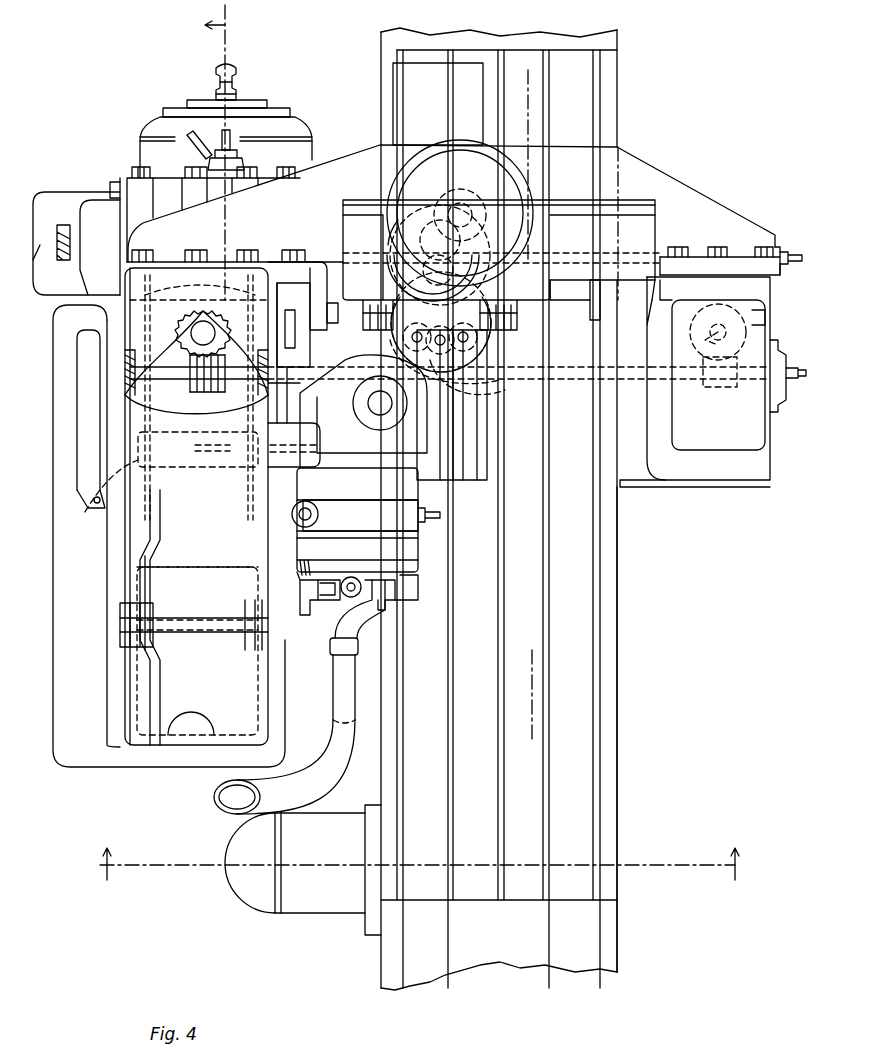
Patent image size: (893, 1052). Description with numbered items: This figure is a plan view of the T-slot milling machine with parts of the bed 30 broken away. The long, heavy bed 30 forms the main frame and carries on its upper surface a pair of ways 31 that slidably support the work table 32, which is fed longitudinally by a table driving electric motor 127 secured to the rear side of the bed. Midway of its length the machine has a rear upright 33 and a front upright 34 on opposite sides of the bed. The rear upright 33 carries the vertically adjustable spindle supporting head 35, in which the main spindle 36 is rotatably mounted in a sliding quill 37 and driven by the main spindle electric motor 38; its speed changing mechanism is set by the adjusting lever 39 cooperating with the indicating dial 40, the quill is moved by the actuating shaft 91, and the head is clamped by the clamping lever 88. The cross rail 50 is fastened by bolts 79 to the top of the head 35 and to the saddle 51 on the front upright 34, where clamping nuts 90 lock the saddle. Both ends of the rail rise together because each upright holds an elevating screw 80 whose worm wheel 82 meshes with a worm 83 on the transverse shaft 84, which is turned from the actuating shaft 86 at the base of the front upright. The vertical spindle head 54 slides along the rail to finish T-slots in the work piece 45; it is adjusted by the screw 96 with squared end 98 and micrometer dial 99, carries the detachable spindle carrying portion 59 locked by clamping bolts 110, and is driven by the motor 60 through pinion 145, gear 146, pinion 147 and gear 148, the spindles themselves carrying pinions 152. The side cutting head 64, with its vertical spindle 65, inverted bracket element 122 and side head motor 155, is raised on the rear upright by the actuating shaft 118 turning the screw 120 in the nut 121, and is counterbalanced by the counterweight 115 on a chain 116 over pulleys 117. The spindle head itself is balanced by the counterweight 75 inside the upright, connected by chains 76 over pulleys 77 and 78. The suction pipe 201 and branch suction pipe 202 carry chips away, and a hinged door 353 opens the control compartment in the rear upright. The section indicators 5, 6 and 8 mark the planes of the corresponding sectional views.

The section line 5- 5 is at (413, 864).
The section line 6- 6 is at (224, 167).
The section line 8- 8 is at (563, 418).
The bed 30 is at (420, 40).
The ways 31 is at (617, 50).
The work table 32 is at (600, 740).
The rear upright 33 is at (110, 430).
The front upright 34 is at (727, 445).
The spindle supporting head 35 is at (160, 128).
The main spindle 36 is at (75, 253).
The quill 37 is at (100, 200).
The main spindle electric motor 38 is at (62, 195).
The adjusting lever 39 is at (232, 68).
The indicating dial 40 is at (185, 100).
The work piece 45 is at (395, 75).
The cross rail 50 is at (650, 175).
The saddle 51 is at (660, 257).
The vertical spindle head 54 is at (562, 248).
The spindle carrying portion 59 is at (490, 340).
The motor 60 is at (525, 190).
The side cutting head 64 is at (415, 575).
The vertical spindle 65 is at (372, 412).
The counterweight 75 is at (145, 665).
The chains 76 is at (250, 580).
The pulleys 77 is at (255, 645).
The pulleys 78 is at (196, 506).
The bolts 79 is at (245, 250).
The elevating screw 80 is at (700, 342).
The worm wheel 82 is at (716, 305).
The worm 83 is at (720, 390).
The transverse shaft 84 is at (566, 385).
The actuating shaft 86 is at (793, 380).
The clamping lever 88 is at (192, 145).
The clamping nuts 90 is at (730, 247).
The actuating shaft 91 is at (240, 150).
The screw 96 is at (612, 255).
The squared end 98 is at (795, 250).
The micrometer dial 99 is at (782, 266).
The clamping bolts 110 is at (370, 320).
The counterweight 115 is at (80, 505).
The chain 116 is at (240, 465).
The pulleys 117 is at (203, 392).
The actuating shaft 118 is at (430, 522).
The screw 120 is at (360, 515).
The nut 121 is at (310, 503).
The inverted bracket element 122 is at (405, 555).
The table driving electric motor 127 is at (255, 885).
The pinion 145 is at (474, 213).
The gear 146 is at (390, 185).
The pinion 147 is at (433, 222).
The gear 148 is at (464, 260).
The pinions 152 is at (470, 375).
The side head motor 155 is at (195, 470).
The pipe 201 is at (218, 800).
The branch suction pipe 202 is at (348, 683).
The hinged door 353 is at (92, 380).